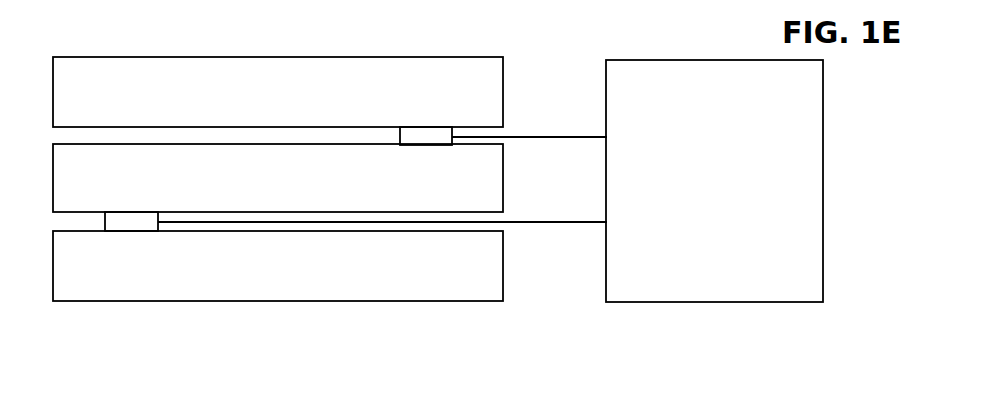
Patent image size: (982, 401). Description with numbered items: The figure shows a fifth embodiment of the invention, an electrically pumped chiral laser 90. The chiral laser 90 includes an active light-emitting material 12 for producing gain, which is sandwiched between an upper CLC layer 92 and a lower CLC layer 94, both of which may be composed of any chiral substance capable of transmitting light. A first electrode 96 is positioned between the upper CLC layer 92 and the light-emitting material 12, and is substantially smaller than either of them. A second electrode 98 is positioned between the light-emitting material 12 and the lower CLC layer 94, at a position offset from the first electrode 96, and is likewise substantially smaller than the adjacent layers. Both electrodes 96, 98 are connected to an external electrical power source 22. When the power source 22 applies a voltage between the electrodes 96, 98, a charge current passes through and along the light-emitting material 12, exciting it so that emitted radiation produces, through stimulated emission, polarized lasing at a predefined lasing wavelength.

The chiral laser 90 is at (555, 60).
The upper CLC layer 92 is at (503, 93).
The lower CLC layer 94 is at (503, 267).
The light-emitting material 12 is at (352, 178).
The first electrode 96 is at (425, 137).
The second electrode 98 is at (132, 222).
The external electrical power source 22 is at (713, 302).